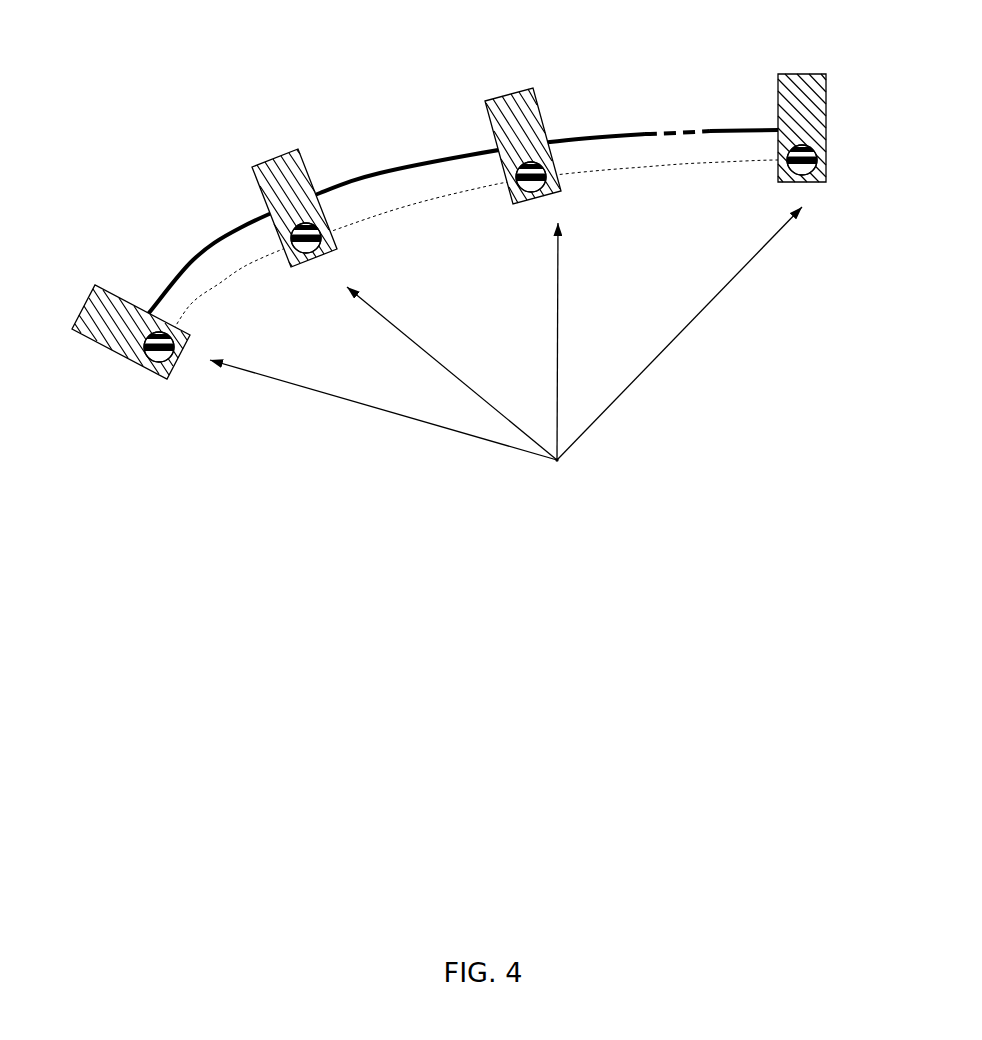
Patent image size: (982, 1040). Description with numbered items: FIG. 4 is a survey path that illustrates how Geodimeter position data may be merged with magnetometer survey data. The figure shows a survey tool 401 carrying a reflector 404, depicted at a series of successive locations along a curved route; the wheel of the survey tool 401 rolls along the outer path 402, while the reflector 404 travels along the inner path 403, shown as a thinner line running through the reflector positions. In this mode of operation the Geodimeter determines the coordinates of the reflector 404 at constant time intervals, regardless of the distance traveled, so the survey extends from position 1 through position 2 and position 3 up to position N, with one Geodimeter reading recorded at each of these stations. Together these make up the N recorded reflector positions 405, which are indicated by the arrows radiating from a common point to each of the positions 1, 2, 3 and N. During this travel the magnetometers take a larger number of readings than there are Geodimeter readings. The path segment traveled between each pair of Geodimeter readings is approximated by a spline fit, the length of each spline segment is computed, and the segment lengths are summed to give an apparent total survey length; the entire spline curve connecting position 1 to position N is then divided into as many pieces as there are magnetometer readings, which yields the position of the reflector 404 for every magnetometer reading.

The survey tool 401 is at (268, 159).
The path 402 is at (380, 173).
The path 403 is at (613, 163).
The reflector 404 is at (143, 363).
The recorded reflector positions 405 is at (506, 354).
The position # 1 is at (115, 362).
The position # 2 is at (295, 222).
The position # 3 is at (523, 160).
The position # N is at (810, 146).